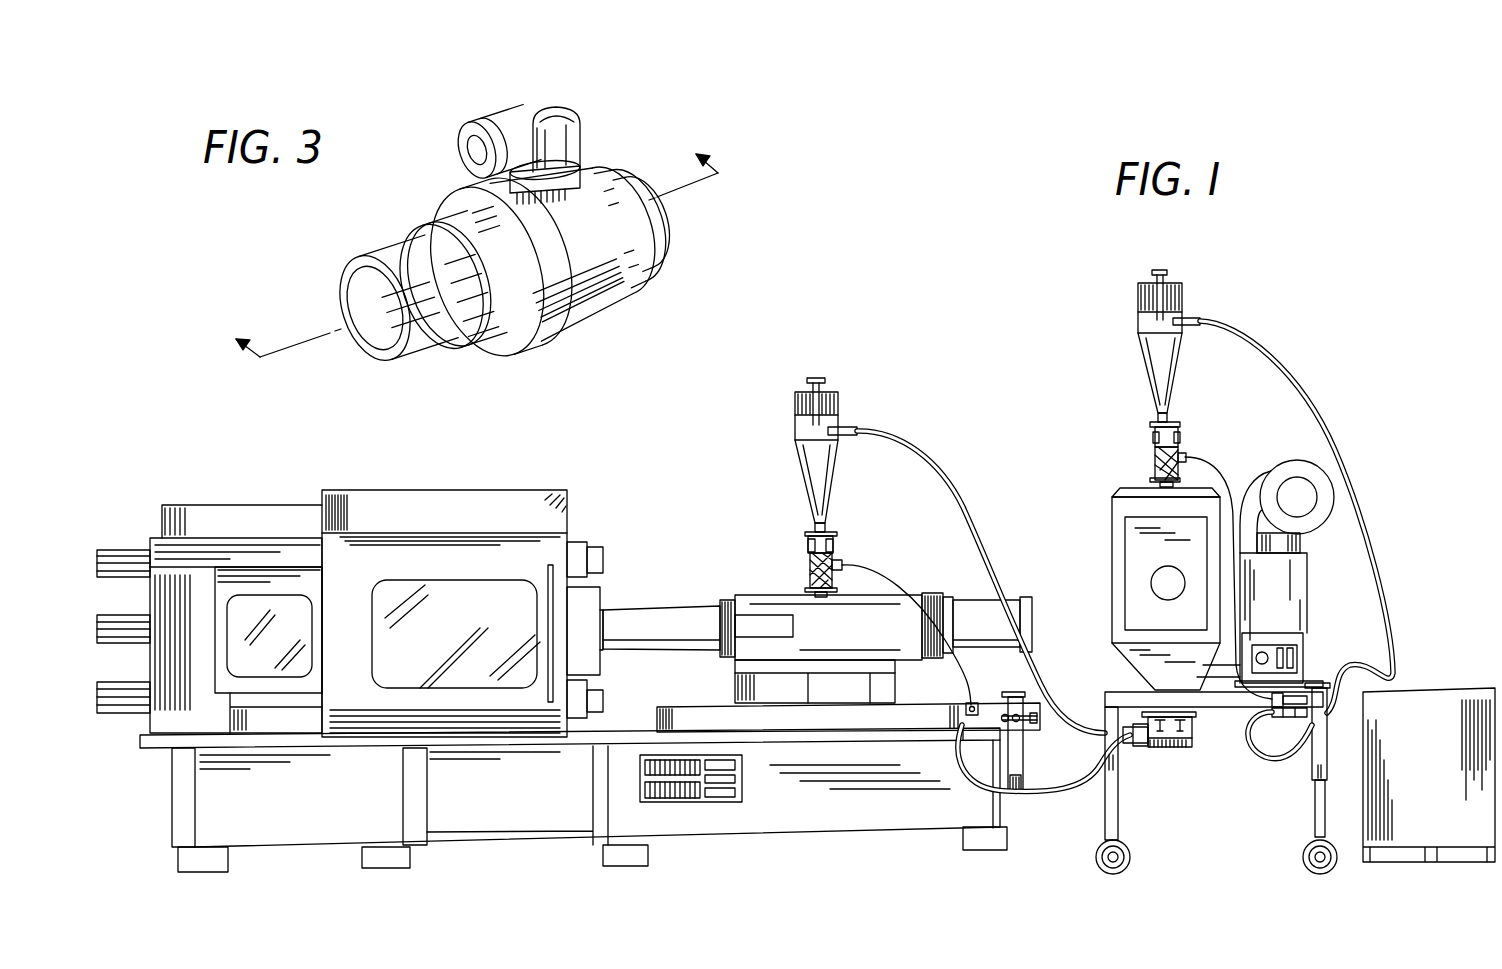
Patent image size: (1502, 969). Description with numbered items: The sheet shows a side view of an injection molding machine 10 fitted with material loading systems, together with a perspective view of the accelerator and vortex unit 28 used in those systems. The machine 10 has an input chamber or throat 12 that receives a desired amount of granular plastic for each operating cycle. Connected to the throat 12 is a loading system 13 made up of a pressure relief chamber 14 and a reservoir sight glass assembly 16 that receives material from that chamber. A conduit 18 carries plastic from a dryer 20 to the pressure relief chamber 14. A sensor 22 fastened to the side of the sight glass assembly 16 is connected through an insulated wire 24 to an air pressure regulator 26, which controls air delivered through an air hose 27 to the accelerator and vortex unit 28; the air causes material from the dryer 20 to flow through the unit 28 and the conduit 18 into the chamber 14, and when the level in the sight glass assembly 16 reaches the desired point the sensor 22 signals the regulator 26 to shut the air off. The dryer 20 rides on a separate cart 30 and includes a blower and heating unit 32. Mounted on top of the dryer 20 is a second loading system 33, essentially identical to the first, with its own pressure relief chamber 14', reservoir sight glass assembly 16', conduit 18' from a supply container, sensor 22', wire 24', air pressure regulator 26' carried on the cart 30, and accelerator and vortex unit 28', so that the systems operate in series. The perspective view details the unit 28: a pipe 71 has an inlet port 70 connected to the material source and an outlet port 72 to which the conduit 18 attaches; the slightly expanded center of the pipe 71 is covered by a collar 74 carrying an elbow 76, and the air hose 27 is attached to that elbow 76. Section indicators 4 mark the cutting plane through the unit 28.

In FIG. 1, the injection molding machine 10 is at (516, 478).
In FIG. 1, the input chamber or throat 12 is at (768, 593).
In FIG. 1, the loading system 13 is at (851, 412).
In FIG. 1, the pressure relief chamber 14 is at (789, 455).
In FIG. 1, the reservoir sight glass assembly 16 is at (849, 532).
In FIG. 1, the conduit 18 is at (981, 582).
In FIG. 1, the dryer 20 is at (1106, 585).
In FIG. 1, the sensor 22 is at (888, 620).
In FIG. 1, the insulated wire 24 is at (985, 690).
In FIG. 1, the air pressure regulator 26 is at (1044, 741).
In FIG. 1, the air hose 27 is at (1047, 796).
In FIG. 3, the accelerator and vortex unit 28 is at (575, 266).
In FIG. 1, the accelerator and vortex unit 28 is at (1159, 759).
In FIG. 1, the cart 30 is at (1110, 690).
In FIG. 1, the blower and heating unit 32 is at (1305, 632).
In FIG. 1, the second loading system 33 is at (1190, 307).
In FIG. 1, the pressure relief chamber 14' is at (1133, 346).
In FIG. 1, the reservoir sight glass assembly 16' is at (1132, 436).
In FIG. 1, the conduit 18' is at (1296, 517).
In FIG. 1, the sensor 22' is at (1193, 441).
In FIG. 1, the wire 24' is at (1228, 563).
In FIG. 1, the air pressure regulator 26' is at (1298, 778).
In FIG. 1, the accelerator and vortex unit 28' is at (1273, 755).
In FIG. 3, the inlet port 70 is at (652, 213).
In FIG. 3, the pipe 71 is at (428, 238).
In FIG. 3, the outlet port 72 is at (370, 322).
In FIG. 3, the collar 74 is at (442, 210).
In FIG. 3, the elbow 76 is at (540, 108).
In FIG. 3, the section line 4- 4 is at (459, 241).